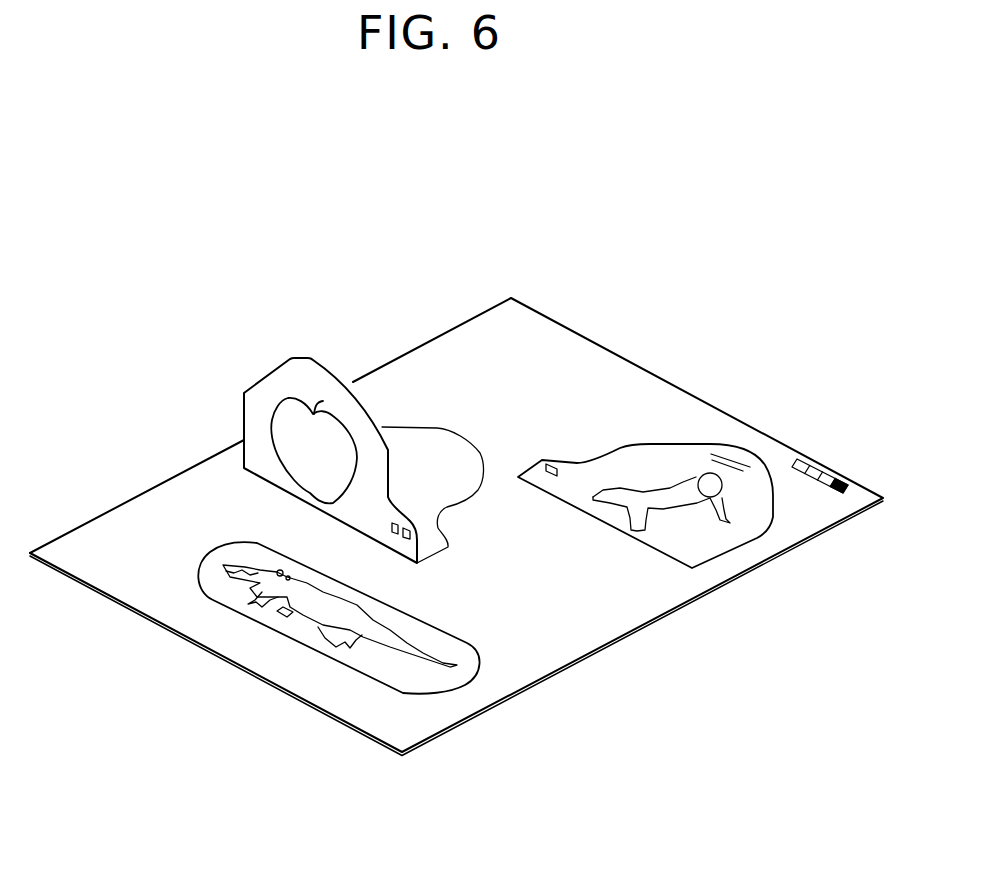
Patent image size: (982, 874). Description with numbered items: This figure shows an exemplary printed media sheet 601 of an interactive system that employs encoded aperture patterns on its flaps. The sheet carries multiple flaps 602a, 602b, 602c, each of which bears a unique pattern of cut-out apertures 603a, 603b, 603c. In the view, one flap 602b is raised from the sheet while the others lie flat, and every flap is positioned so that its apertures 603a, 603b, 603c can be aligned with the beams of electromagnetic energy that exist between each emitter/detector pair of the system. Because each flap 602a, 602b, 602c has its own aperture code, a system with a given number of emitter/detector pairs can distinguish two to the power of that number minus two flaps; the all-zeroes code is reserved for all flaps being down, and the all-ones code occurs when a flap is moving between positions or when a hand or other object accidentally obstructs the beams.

The printed media sheet 601 is at (488, 338).
The flap 602a is at (678, 453).
The flap 602b is at (285, 383).
The flap 602c is at (225, 555).
The cut-out apertures 603a is at (557, 478).
The cut-out apertures 603b is at (417, 543).
The cut-out apertures 603c is at (290, 615).